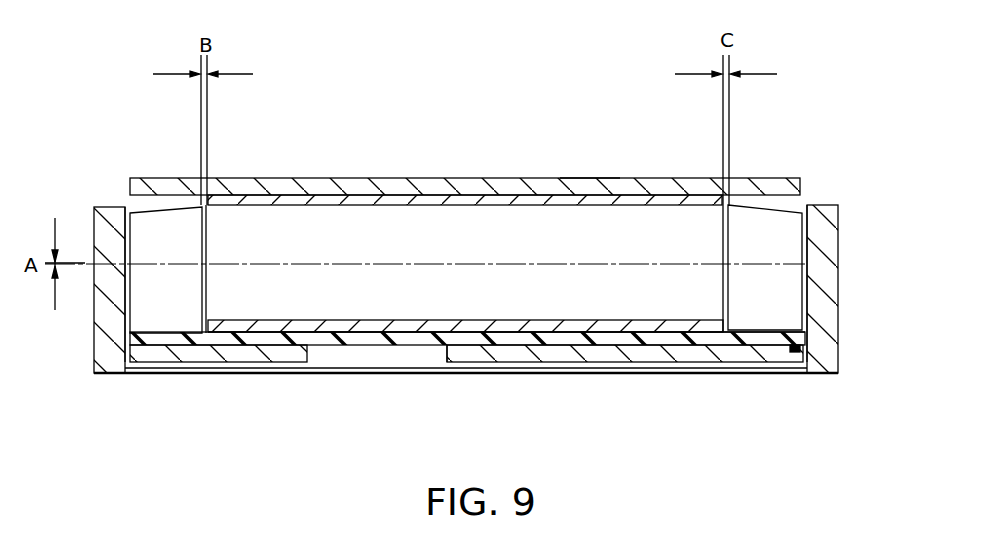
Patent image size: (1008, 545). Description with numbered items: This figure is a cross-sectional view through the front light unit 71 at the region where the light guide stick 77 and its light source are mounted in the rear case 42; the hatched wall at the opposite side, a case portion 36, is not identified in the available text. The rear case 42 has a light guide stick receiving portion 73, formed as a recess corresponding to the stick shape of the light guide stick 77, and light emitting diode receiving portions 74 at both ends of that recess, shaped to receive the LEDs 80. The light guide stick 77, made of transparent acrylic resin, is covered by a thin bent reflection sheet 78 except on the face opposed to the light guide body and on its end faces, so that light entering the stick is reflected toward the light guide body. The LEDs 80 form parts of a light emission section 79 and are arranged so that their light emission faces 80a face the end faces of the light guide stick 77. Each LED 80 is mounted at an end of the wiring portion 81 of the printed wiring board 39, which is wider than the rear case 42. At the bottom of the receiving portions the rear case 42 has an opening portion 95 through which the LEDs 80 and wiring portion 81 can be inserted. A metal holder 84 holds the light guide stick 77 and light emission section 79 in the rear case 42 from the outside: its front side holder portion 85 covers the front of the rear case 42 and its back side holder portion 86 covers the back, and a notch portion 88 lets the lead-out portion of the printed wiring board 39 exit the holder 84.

The left side wall of holder 36 is at (107, 207).
The printed wiring board 39 is at (537, 335).
The rear case 42 is at (830, 263).
The holder 71 is at (470, 282).
The light guide stick receiving portion 73 is at (745, 370).
The light emitting diode receiving portion 74 is at (128, 315).
The light guide stick 77 is at (395, 222).
The reflection sheet 78 is at (349, 197).
The light emission section 79 is at (791, 356).
The light emitting diode 80 is at (165, 227).
The light emission face 80a is at (207, 243).
The wiring portion 81 is at (617, 340).
The holder 84 is at (511, 178).
The front side holder portion 85 is at (585, 178).
The back side holder portion 86 is at (224, 362).
The notch portion 88 is at (443, 350).
The opening portion 95 is at (352, 360).